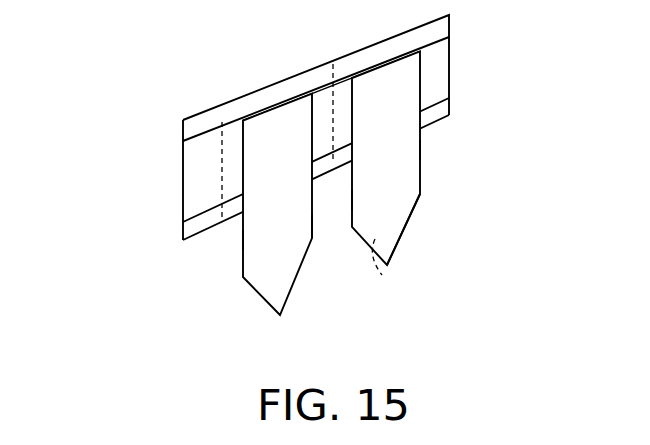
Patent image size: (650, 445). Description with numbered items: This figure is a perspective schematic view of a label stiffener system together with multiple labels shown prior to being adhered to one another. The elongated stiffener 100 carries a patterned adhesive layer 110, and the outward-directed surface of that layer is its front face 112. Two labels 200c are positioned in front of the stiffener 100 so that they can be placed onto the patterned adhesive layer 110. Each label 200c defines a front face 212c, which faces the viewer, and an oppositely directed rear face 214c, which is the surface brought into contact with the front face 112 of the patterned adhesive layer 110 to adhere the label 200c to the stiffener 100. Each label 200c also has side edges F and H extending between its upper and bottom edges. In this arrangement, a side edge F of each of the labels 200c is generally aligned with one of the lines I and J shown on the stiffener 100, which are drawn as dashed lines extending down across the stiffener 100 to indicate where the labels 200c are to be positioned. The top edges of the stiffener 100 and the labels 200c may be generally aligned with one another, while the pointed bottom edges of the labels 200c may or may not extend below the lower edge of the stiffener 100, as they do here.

The stiffener 100 is at (208, 112).
The patterned adhesive layer 110 is at (258, 169).
The front face of the patterned adhesive layer 112 is at (203, 164).
The label 200c is at (276, 247).
The front face 212c is at (397, 226).
The rear face 214c is at (382, 275).
The side edge F is at (243, 242).
The side edge H is at (313, 225).
The line I is at (222, 122).
The line J is at (333, 64).